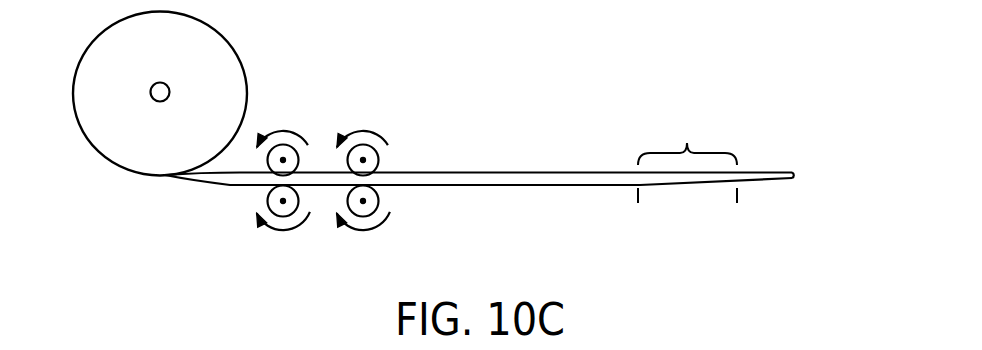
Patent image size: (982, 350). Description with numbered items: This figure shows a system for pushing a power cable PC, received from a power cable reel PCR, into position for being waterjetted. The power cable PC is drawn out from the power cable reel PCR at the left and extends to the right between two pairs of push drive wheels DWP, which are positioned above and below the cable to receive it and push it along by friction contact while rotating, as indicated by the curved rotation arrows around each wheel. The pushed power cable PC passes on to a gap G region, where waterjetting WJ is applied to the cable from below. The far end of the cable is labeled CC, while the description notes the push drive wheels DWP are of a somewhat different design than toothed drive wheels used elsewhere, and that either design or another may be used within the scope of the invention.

The power cable reel PCR is at (187, 60).
The push drive wheels DWP is at (316, 152).
The power cable PC is at (517, 150).
The gap G is at (687, 158).
The cut core / web end CC is at (786, 155).
The waterjetting WJ is at (711, 221).